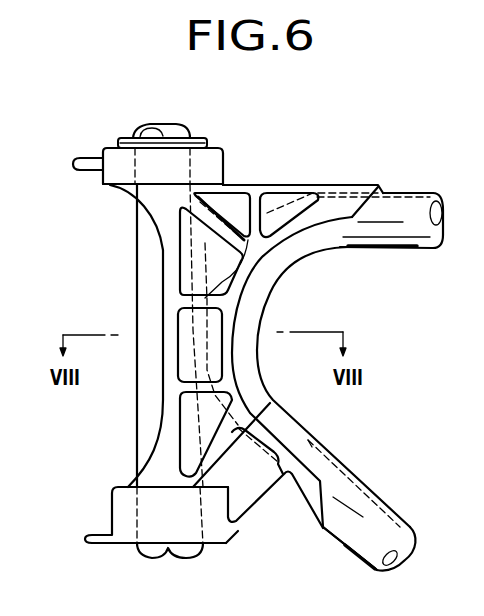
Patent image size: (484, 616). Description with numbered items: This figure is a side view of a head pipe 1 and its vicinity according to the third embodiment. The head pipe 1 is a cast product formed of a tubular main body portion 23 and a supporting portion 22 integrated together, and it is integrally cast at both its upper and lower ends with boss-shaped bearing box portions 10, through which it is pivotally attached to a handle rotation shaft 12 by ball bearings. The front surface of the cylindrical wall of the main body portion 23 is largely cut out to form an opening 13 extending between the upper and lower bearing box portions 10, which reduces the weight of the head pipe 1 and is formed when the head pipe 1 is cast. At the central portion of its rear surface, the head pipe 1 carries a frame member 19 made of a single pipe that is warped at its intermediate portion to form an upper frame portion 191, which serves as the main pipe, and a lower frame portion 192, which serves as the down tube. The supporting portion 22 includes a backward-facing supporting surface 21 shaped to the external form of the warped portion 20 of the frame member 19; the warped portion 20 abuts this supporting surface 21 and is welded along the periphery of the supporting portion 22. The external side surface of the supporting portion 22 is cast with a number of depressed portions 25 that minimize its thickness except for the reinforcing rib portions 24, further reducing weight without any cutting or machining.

The head pipe 1 is at (232, 153).
The bearing box portion 10 is at (112, 156).
The handle rotation shaft 12 is at (137, 394).
The opening 13 is at (137, 254).
The frame member 19 is at (403, 250).
The upper frame portion 191 is at (413, 192).
The lower frame portion 192 is at (352, 542).
The warped portion 20 is at (264, 313).
The supporting surface 21 is at (220, 433).
The supporting portion 22 is at (293, 183).
The main body portion 23 is at (140, 197).
The reinforcing rib portion 24 is at (206, 294).
The depressed portion 25 is at (244, 222).